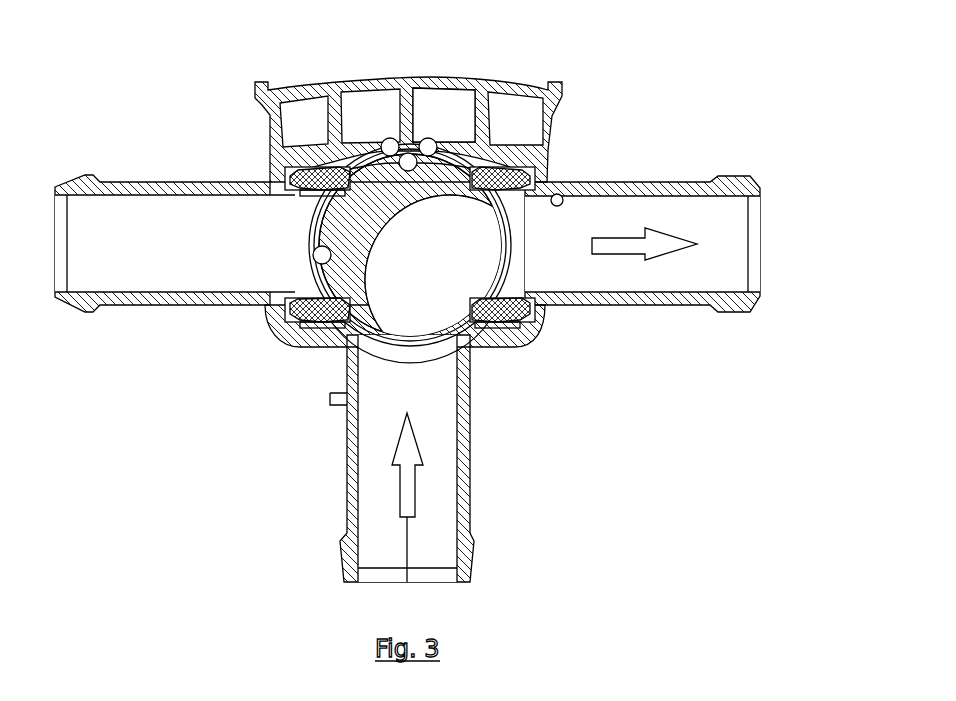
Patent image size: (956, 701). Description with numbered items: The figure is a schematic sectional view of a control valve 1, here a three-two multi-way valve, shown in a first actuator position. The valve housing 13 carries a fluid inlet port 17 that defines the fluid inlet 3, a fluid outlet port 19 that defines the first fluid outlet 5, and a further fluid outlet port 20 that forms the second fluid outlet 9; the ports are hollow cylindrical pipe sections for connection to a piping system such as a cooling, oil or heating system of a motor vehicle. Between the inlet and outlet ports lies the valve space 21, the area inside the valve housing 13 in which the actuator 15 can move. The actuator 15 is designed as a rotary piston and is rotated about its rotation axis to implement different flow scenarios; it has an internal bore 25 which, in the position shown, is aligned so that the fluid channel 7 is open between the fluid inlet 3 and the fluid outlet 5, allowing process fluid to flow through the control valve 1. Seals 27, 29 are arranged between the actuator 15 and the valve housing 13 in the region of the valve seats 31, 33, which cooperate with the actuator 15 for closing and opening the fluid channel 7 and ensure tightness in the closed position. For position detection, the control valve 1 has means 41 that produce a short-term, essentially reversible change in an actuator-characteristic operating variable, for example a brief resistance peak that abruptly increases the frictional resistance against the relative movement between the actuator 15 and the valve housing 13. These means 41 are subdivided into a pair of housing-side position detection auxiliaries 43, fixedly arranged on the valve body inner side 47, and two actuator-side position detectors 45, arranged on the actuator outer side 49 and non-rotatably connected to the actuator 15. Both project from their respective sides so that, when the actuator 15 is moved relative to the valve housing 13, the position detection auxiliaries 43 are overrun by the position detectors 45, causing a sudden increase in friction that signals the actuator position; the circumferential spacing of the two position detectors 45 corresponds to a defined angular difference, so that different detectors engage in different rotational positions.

The control valve 1 is at (440, 295).
The fluid inlet 3 is at (414, 557).
The fluid outlet 5 is at (720, 257).
The fluid channel 7 is at (562, 196).
The fluid outlet 9 is at (107, 258).
The valve housing 13 is at (299, 78).
The actuator 15 is at (370, 180).
The fluid inlet port 17 is at (470, 462).
The fluid outlet port 19 is at (675, 182).
The fluid outlet port 20 is at (152, 182).
The valve space 21 is at (447, 335).
The bore 25 is at (440, 274).
The seal 27 is at (296, 175).
The seal 29 is at (325, 326).
The valve seat 31 is at (306, 200).
The valve seat 33 is at (518, 208).
The means 41 is at (450, 136).
The position detection auxiliary 43 is at (428, 138).
The position detector 45 is at (410, 170).
The valve body inner side 47 is at (500, 172).
The actuator outer side 49 is at (372, 340).